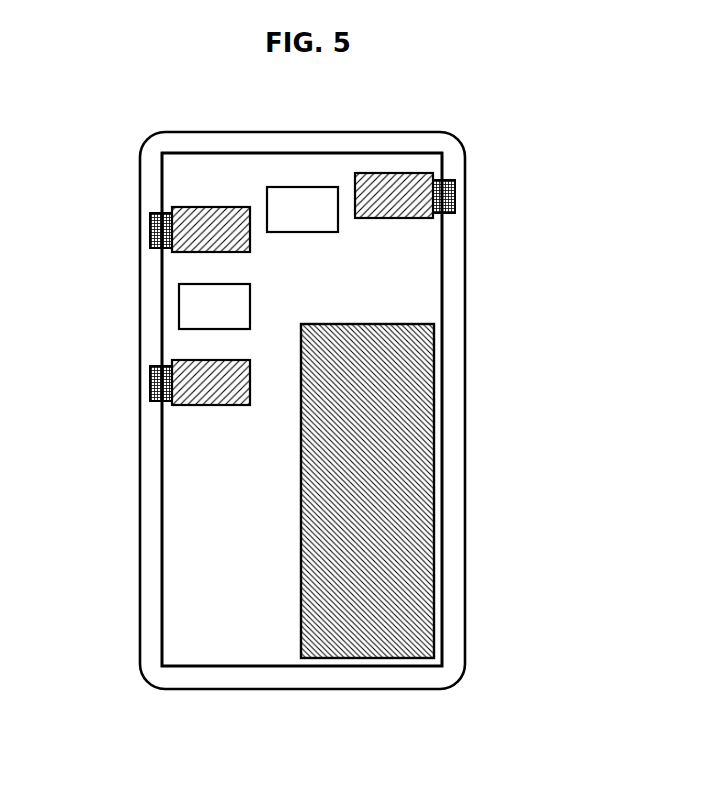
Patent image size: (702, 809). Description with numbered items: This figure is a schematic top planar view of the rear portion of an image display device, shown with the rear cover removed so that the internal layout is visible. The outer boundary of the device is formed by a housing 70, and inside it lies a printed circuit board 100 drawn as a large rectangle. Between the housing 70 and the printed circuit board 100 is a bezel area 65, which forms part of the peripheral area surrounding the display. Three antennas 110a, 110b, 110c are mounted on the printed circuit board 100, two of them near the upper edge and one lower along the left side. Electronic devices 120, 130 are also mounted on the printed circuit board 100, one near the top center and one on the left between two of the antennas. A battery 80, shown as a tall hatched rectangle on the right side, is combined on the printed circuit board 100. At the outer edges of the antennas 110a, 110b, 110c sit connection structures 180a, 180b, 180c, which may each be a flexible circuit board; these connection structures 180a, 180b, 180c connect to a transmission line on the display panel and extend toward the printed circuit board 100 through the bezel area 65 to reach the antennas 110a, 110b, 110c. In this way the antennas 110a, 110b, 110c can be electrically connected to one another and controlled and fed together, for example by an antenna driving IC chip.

The housing 70 is at (465, 370).
The bezel area 65 is at (458, 532).
The printed circuit board 100 is at (223, 653).
The battery 80 is at (370, 647).
The antenna 110a is at (222, 218).
The antenna 110b is at (398, 185).
The antenna 110c is at (208, 407).
The electronic device 120 is at (302, 198).
The electronic device 130 is at (176, 312).
The connection structure 180a is at (150, 235).
The connection structure 180b is at (455, 192).
The connection structure 180c is at (150, 387).